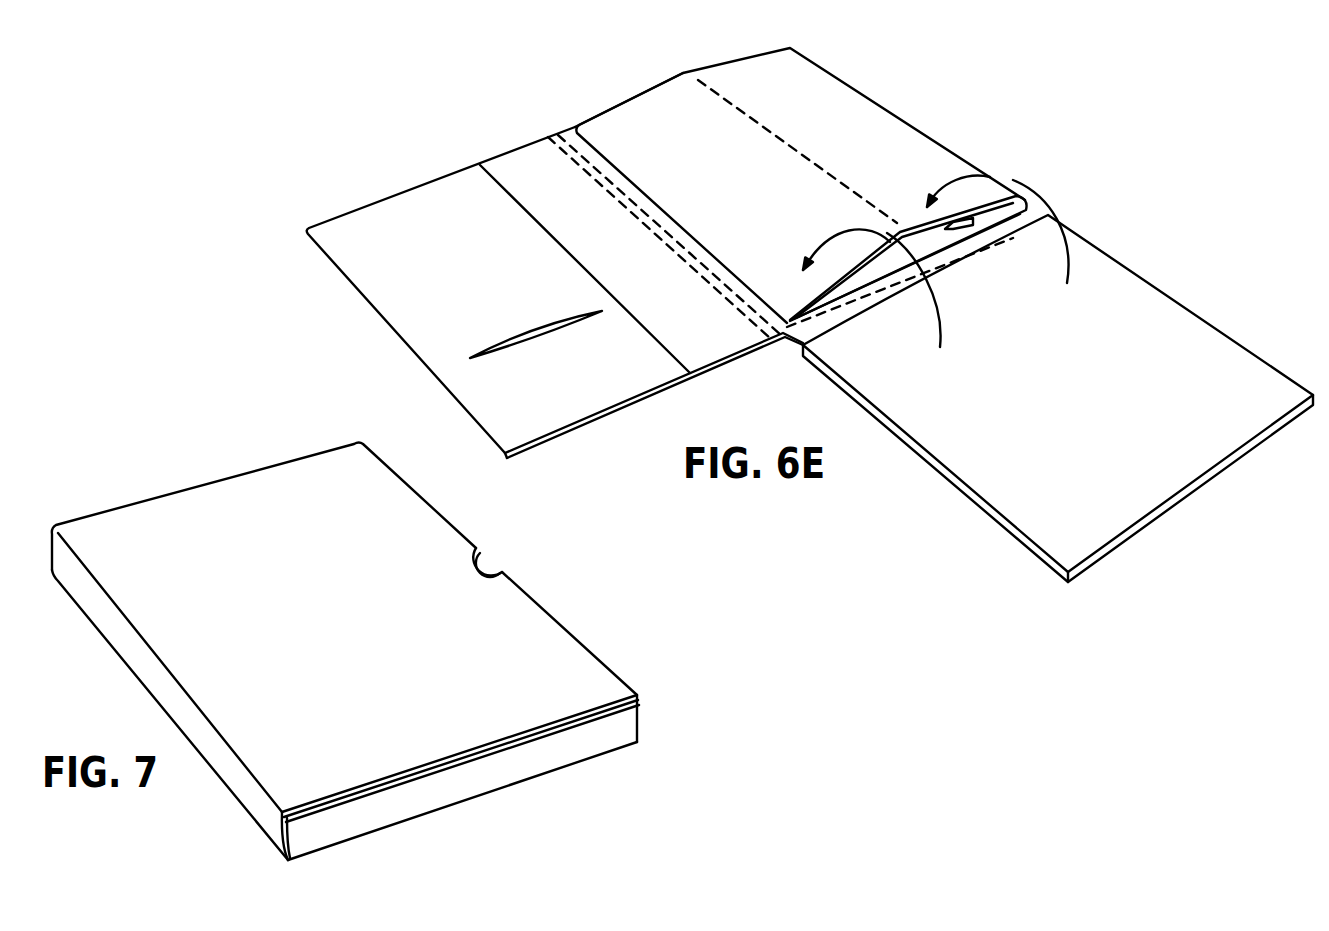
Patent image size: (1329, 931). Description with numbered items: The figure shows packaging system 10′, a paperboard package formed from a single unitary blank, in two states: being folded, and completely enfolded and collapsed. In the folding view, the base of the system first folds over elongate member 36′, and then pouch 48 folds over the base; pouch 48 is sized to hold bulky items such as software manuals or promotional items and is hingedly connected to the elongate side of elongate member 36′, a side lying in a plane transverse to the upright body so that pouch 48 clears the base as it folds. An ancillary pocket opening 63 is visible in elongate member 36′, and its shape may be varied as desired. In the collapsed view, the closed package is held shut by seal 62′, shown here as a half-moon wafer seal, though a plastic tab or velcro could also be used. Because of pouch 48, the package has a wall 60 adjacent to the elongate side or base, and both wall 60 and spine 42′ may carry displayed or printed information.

In FIG. 6E, the packaging system 10′ is at (993, 70).
In FIG. 7, the packaging system 10′ is at (651, 640).
In FIG. 6E, the elongate member 36′ is at (385, 192).
In FIG. 6E, the pouch 48 is at (1180, 297).
In FIG. 6E, the ancillary pocket opening 63 is at (528, 344).
In FIG. 7, the seal 62′ is at (481, 558).
In FIG. 7, the wall 60 is at (530, 758).
In FIG. 7, the spine 42′ is at (235, 778).